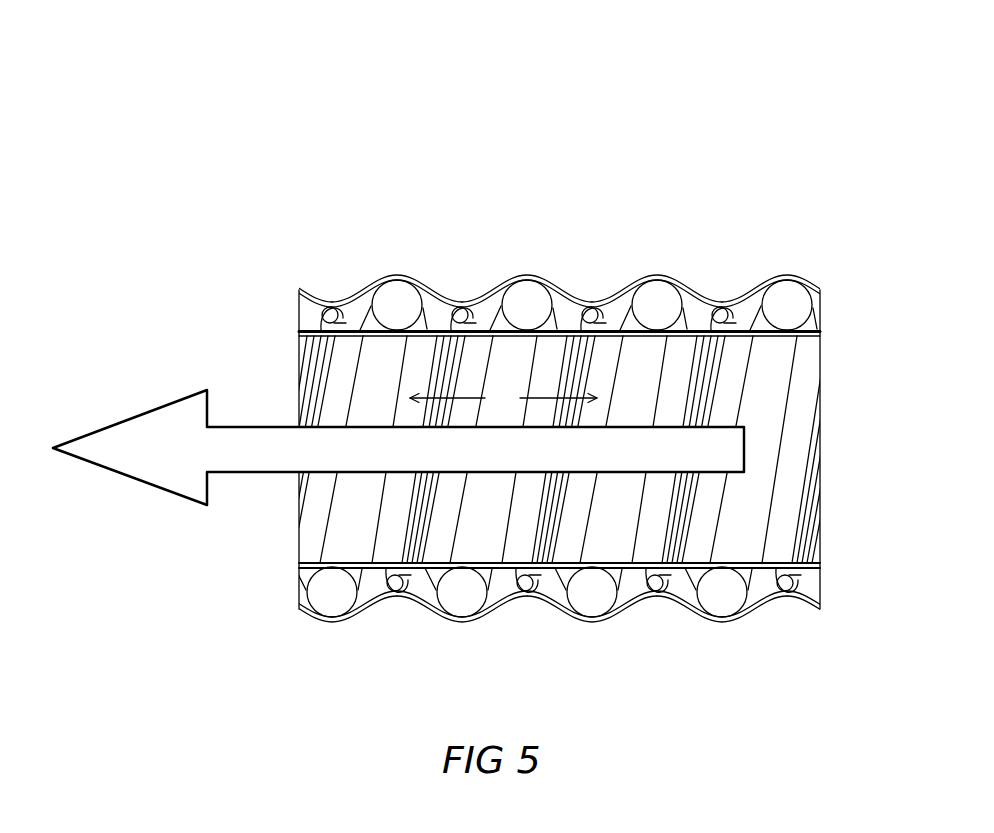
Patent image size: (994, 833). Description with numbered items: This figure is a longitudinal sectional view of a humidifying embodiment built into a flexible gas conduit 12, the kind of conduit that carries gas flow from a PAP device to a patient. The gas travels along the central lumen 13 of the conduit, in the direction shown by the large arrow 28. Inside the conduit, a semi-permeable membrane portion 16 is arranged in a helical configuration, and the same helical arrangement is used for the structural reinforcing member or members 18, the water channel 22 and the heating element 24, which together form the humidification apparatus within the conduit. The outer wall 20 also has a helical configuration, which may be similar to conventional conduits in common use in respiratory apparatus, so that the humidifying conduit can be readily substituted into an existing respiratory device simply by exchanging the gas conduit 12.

The flexible gas conduit 12 is at (550, 200).
The central lumen 13 is at (503, 398).
The semi-permeable membrane portion 16 is at (522, 449).
The structural reinforcing member 18 is at (556, 448).
The outer wall 20 is at (527, 448).
The water channel 22 is at (593, 580).
The heating element 24 is at (528, 318).
The arrow 28 is at (128, 418).